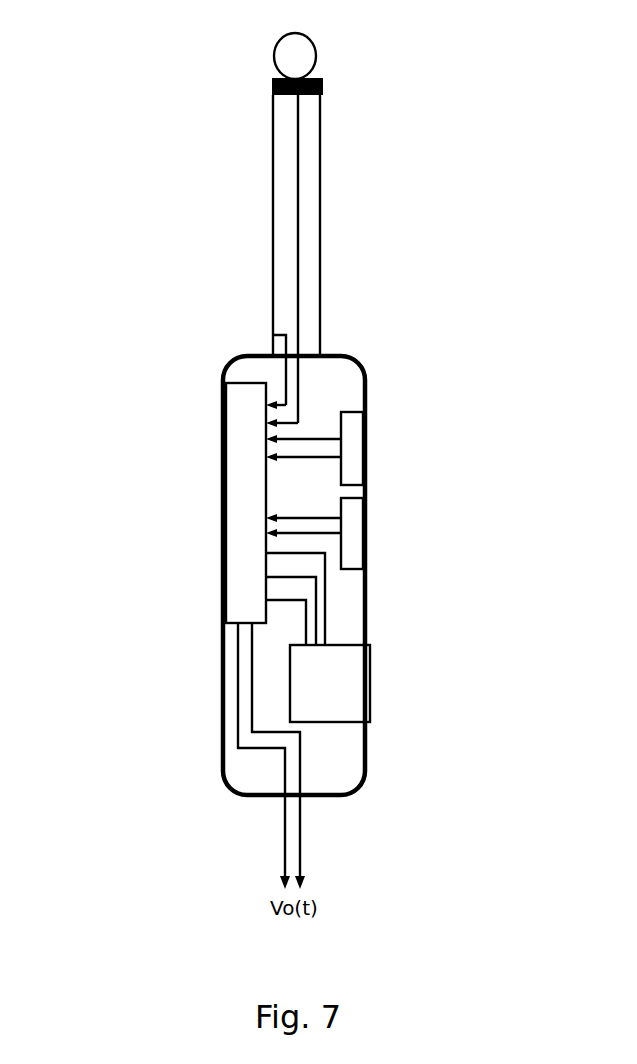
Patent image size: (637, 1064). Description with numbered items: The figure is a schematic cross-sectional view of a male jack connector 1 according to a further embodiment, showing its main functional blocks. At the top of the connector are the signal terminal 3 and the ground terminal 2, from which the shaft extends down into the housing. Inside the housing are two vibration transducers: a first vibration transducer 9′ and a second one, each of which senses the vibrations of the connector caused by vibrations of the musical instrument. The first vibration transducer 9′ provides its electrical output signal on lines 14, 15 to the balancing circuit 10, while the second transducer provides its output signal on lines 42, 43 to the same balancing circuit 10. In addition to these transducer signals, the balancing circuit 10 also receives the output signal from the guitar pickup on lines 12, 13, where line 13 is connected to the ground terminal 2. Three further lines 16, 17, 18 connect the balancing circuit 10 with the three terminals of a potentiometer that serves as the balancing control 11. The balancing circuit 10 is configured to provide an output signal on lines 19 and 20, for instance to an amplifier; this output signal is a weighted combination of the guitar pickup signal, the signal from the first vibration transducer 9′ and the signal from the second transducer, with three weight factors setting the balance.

The male jack connector 1 is at (362, 362).
The ground terminal 2 is at (320, 177).
The signal terminal 3 is at (300, 63).
The first vibration transducer 9′ is at (352, 469).
The balancing circuit 10 is at (243, 452).
The balancing control 11 is at (348, 698).
The line 12 is at (297, 312).
The line 13 is at (285, 400).
The line 14 is at (310, 402).
The line 15 is at (305, 455).
The line 16 is at (288, 553).
The line 17 is at (295, 577).
The line 18 is at (283, 600).
The output line 19 is at (283, 830).
The output line 20 is at (297, 842).
The line 42 is at (302, 515).
The line 43 is at (317, 535).